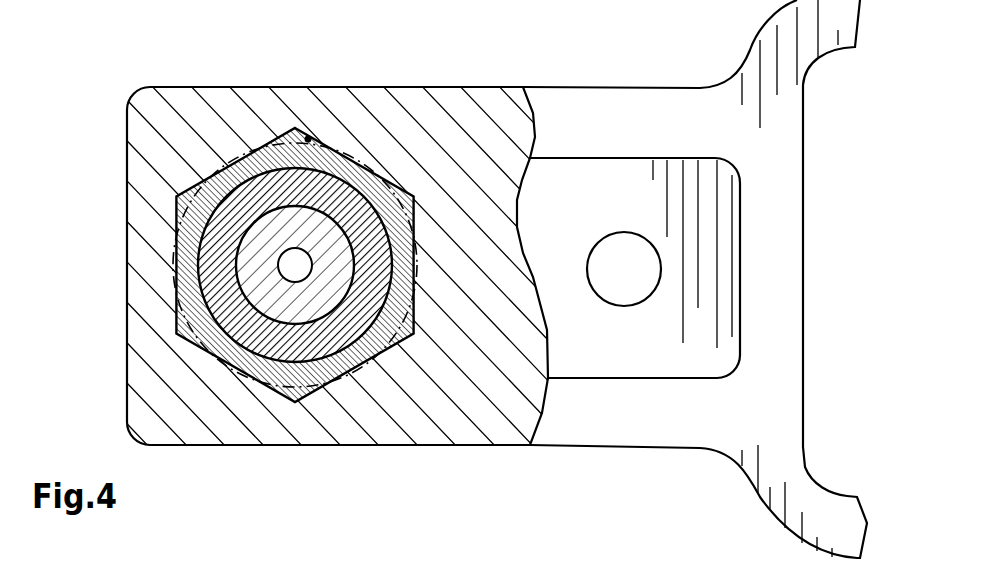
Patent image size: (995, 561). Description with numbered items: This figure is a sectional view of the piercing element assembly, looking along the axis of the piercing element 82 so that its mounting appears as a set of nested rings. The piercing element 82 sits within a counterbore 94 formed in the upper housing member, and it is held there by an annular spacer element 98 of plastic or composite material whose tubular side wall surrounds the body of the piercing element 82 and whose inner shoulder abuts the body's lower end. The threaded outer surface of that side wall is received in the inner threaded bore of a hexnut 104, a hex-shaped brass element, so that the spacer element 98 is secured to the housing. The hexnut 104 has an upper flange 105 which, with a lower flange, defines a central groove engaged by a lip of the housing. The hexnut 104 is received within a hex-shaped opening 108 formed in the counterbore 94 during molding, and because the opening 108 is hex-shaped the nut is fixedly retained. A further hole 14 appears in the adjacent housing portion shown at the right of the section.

The hole 14 is at (607, 277).
The piercing element 82 is at (292, 283).
The counterbore 94 is at (385, 347).
The annular spacer element 98 is at (320, 330).
The hexnut 104 is at (195, 218).
The upper flange 105 is at (310, 135).
The hex-shaped opening 108 is at (193, 187).